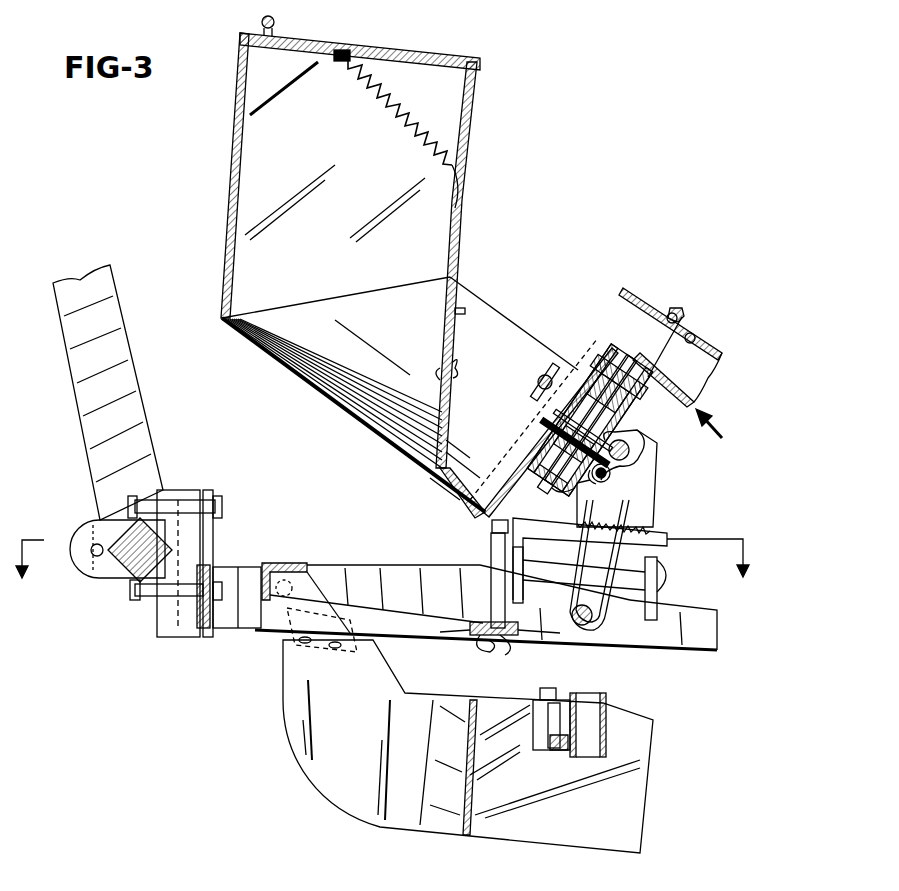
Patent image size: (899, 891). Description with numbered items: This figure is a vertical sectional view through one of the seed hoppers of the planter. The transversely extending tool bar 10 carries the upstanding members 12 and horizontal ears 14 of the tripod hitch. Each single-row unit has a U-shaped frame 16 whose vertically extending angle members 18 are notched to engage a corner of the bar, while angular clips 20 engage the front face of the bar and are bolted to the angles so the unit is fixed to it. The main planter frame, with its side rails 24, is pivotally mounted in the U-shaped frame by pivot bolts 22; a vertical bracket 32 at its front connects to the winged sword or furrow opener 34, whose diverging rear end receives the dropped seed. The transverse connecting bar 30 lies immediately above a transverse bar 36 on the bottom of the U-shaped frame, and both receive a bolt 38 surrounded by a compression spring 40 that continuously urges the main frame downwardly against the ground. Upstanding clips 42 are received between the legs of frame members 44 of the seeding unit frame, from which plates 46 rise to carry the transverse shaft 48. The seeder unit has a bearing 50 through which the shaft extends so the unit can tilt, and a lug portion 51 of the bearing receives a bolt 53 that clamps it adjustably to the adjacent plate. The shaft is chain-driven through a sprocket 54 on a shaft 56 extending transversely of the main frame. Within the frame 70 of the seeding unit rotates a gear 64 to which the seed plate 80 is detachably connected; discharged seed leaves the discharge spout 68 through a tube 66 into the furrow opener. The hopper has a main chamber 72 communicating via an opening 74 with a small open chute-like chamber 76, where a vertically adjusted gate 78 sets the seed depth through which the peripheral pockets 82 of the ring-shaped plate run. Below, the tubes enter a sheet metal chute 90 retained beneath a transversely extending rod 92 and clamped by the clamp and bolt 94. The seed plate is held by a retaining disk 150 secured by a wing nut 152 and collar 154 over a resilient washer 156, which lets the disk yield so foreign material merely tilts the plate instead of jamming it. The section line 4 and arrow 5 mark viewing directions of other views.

The section line 4- 4 is at (382, 567).
The viewing direction arrow 5 is at (717, 431).
The tool bar 10 is at (120, 565).
The upstanding members 12 is at (145, 428).
The horizontal ears 14 is at (82, 570).
The U-shaped frame 16 is at (245, 628).
The angle members 18 is at (172, 637).
The angular clips 20 is at (135, 600).
The pivot bolts 22 is at (296, 580).
The side rails 24 is at (240, 552).
The transverse connecting bar 30 is at (505, 655).
The vertical bracket 32 is at (290, 648).
The winged sword or furrow opener 34 is at (345, 790).
The transverse bar 36 is at (460, 645).
The bolt 38 is at (485, 655).
The compression spring 40 is at (490, 550).
The upstanding clips 42 is at (540, 640).
The frame members 44 is at (665, 560).
The plates 46 is at (640, 505).
The shaft 48 is at (640, 440).
The bearing 50 is at (612, 474).
The lug portion 51 is at (606, 484).
The bolt 53 is at (568, 500).
The sprocket 54 is at (602, 628).
The shaft 56 is at (580, 628).
The gear 64 is at (668, 374).
The tube 66 is at (697, 336).
The discharge spout 68 is at (680, 305).
The frame 70 is at (638, 292).
The main chamber 72 is at (466, 213).
The opening 74 is at (432, 478).
The chute-like chamber 76 is at (460, 492).
The gate 78 is at (463, 308).
The seed plate 80 is at (525, 445).
The peripheral pockets 82 is at (470, 452).
The sheet metal chute 90 is at (606, 708).
The transversely extending rod 92 is at (545, 752).
The clamp and bolt 94 is at (540, 690).
The retaining disk 150 is at (610, 355).
The wing nut 152 is at (540, 374).
The collar 154 is at (585, 375).
The resilient washer 156 is at (588, 395).